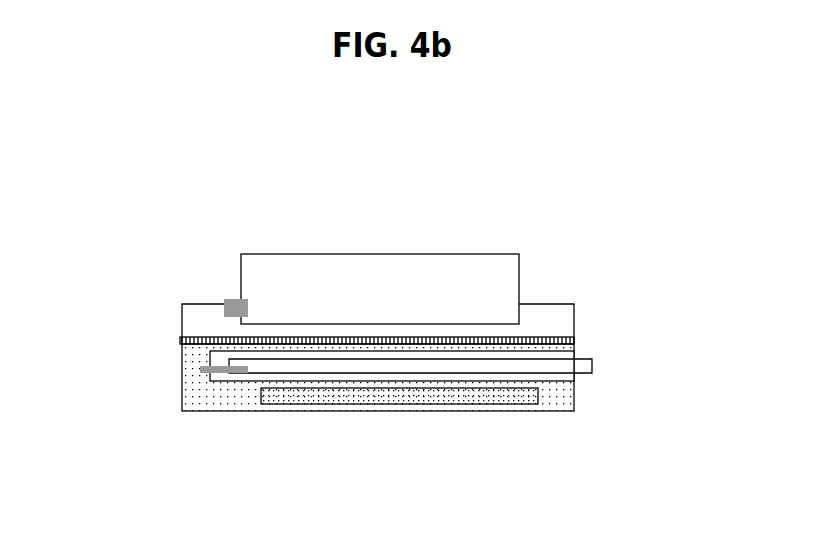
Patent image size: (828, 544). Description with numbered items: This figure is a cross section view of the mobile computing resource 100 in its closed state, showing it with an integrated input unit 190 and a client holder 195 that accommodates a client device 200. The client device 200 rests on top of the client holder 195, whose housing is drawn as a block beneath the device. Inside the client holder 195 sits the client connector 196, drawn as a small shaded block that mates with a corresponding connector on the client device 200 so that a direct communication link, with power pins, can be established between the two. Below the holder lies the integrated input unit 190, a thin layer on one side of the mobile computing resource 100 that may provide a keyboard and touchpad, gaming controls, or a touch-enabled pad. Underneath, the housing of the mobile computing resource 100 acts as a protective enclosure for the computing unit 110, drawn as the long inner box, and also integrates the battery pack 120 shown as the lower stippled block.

The mobile computing resource 100 is at (575, 400).
The computing unit 110 is at (589, 358).
The battery pack 120 is at (393, 396).
The integrated input unit 190 is at (181, 340).
The client holder 195 is at (202, 325).
The client connector 196 is at (230, 302).
The client device 200 is at (375, 268).